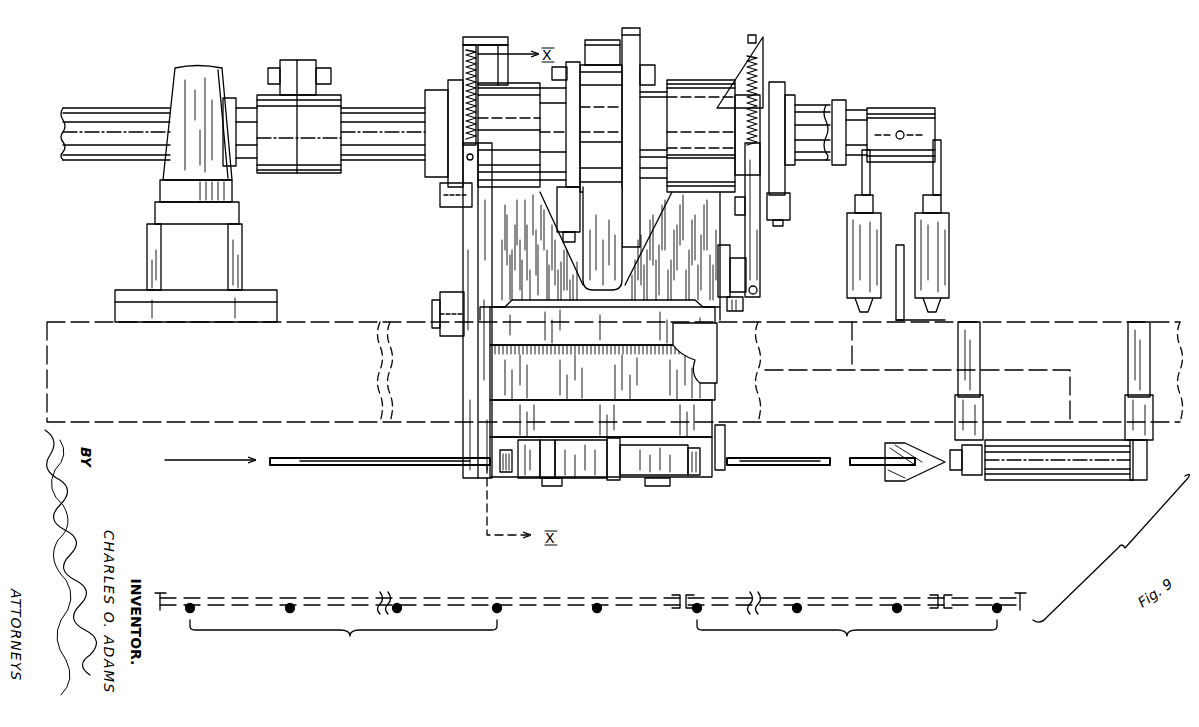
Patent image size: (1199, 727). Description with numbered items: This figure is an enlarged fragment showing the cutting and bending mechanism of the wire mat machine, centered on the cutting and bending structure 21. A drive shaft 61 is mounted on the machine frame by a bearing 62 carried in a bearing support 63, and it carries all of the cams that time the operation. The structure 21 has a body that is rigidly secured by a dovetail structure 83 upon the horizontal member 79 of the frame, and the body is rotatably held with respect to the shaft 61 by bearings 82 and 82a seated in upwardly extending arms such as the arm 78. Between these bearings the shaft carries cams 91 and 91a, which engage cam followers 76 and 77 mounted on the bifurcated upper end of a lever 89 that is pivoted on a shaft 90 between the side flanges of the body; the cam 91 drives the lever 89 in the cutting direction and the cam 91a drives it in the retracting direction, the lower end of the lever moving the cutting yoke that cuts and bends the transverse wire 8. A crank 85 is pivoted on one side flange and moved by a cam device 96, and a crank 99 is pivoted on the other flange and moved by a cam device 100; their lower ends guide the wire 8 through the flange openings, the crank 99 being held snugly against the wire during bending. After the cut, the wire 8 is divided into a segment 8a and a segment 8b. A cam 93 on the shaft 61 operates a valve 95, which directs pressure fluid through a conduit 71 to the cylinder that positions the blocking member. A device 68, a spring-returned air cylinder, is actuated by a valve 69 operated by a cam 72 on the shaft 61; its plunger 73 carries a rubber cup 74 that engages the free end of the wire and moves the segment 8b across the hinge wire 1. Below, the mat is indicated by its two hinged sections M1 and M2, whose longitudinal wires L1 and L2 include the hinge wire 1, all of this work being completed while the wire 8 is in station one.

The hinge wire 1 is at (599, 614).
The transverse wire 8 is at (330, 470).
The transverse wire segment 8a is at (378, 466).
The transverse wire segment 8b is at (803, 470).
The cutting and bending structure 21 is at (608, 487).
The drive shaft 61 is at (374, 110).
The bearing 62 is at (183, 86).
The bearing support 63 is at (135, 250).
The device (air cylinder) 68 is at (1020, 482).
The valve 69 is at (942, 273).
The conduit 71 is at (740, 378).
The cam 72 is at (942, 170).
The plunger 73 is at (948, 478).
The cup 74 is at (903, 482).
The cam follower 76 is at (600, 40).
The cam follower 77 is at (568, 210).
The upwardly extending arm 78 is at (762, 285).
The horizontal member 79 is at (332, 320).
The bearing 82 is at (672, 95).
The bearing 82a is at (509, 135).
The dovetail structure 83 is at (582, 400).
The crank 85 is at (740, 252).
The lever 89 is at (610, 268).
The shaft 90 is at (440, 305).
The cam 91 is at (640, 32).
The cam 91a is at (580, 62).
The cam 93 is at (870, 168).
The valve 95 is at (855, 262).
The cam device 96 is at (805, 98).
The crank 99 is at (452, 272).
The cam device 100 is at (440, 82).
The longitudinal wires L1 is at (343, 645).
The longitudinal wires L2 is at (847, 645).
The mat section M1 is at (287, 596).
The mat section M2 is at (868, 594).